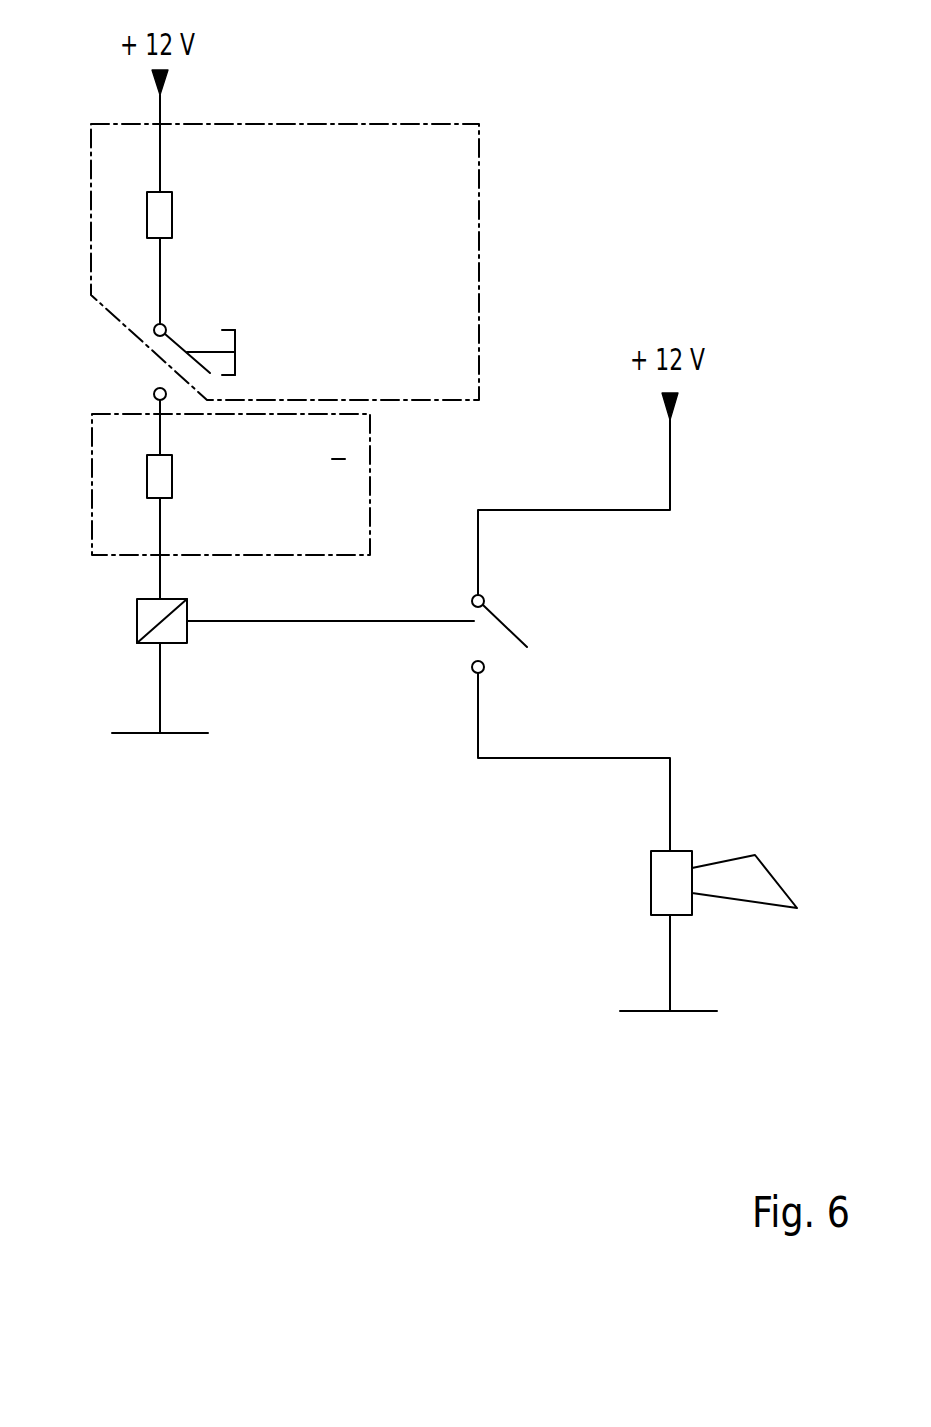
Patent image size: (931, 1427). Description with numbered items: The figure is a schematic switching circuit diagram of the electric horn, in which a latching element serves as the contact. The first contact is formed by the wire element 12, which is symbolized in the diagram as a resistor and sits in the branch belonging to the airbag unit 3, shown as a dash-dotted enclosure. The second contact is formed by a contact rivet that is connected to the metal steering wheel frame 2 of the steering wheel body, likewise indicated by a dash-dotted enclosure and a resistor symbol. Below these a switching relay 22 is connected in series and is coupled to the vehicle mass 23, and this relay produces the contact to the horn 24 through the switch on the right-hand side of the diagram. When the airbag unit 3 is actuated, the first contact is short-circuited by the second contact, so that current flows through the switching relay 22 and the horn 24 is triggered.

The metal steering wheel frame 2 is at (167, 474).
The airbag unit 3 is at (402, 187).
The wire element 12 is at (163, 213).
The switching relay 22 is at (137, 621).
The vehicle mass 23 is at (143, 733).
The horn 24 is at (702, 852).